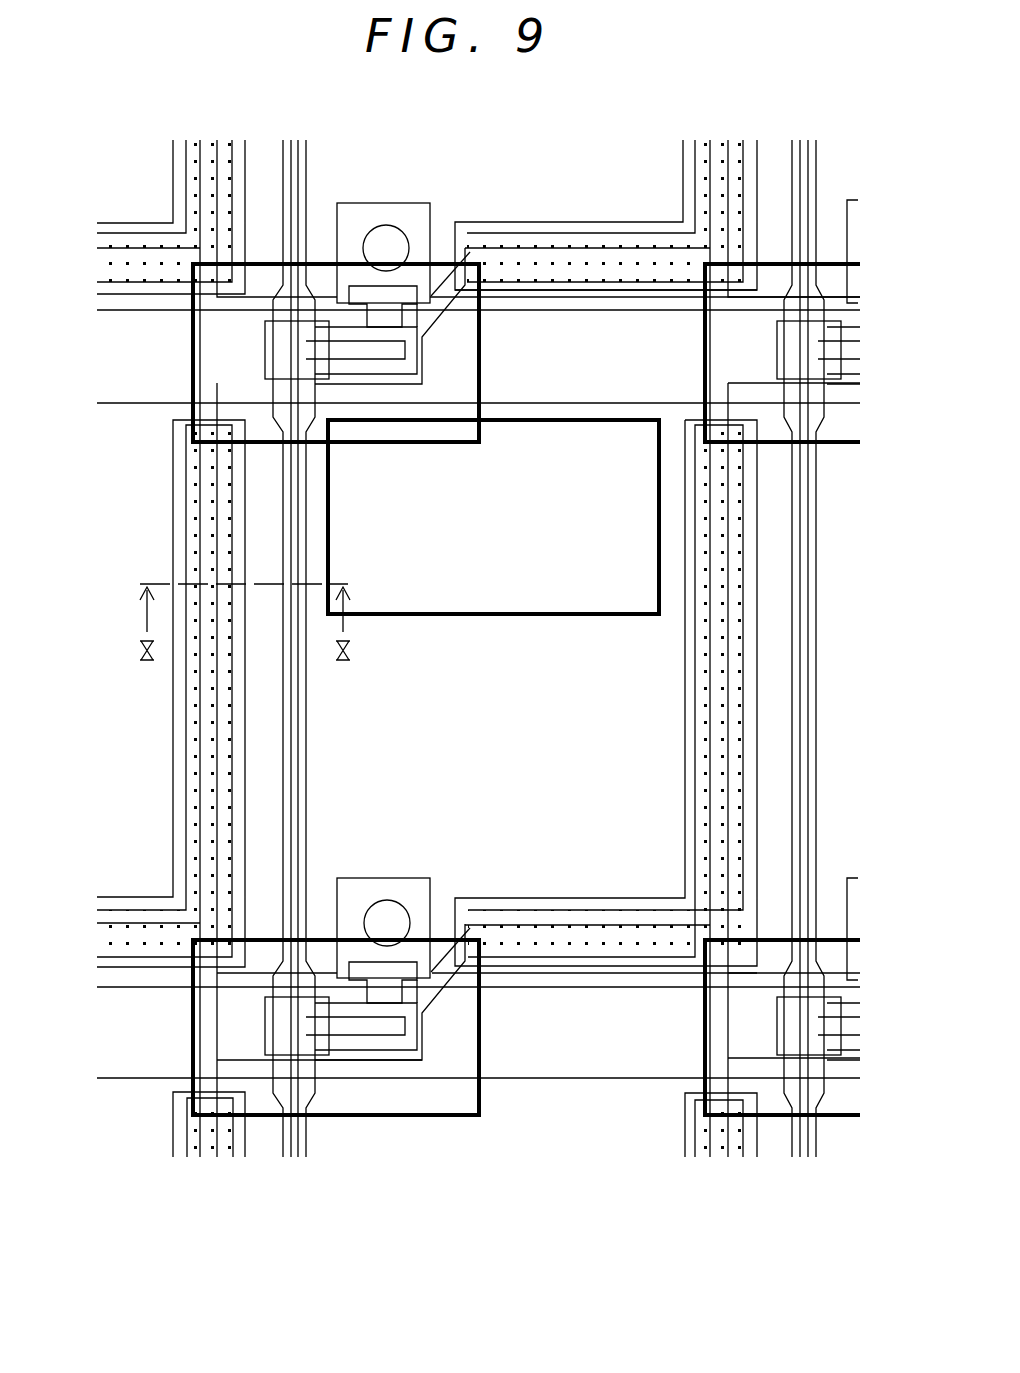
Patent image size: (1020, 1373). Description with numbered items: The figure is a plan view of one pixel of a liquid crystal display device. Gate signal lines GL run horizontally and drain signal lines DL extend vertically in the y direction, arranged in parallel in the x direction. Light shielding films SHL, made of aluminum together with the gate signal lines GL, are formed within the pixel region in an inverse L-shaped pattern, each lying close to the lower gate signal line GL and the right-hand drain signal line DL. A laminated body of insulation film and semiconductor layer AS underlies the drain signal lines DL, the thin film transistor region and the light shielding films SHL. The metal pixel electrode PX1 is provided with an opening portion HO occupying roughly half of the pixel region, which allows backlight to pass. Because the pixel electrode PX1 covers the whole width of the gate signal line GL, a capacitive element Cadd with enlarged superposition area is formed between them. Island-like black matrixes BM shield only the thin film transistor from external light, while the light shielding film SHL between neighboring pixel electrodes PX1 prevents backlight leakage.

The black matrix BM is at (435, 262).
The light shielding film SHL is at (505, 170).
The pixel electrode PX1 is at (642, 272).
The capacitive element Cadd is at (585, 350).
The gate signal line GL is at (88, 312).
The semiconductor layer AS is at (247, 482).
The opening portion HO is at (659, 600).
The drain signal line DL is at (310, 1161).